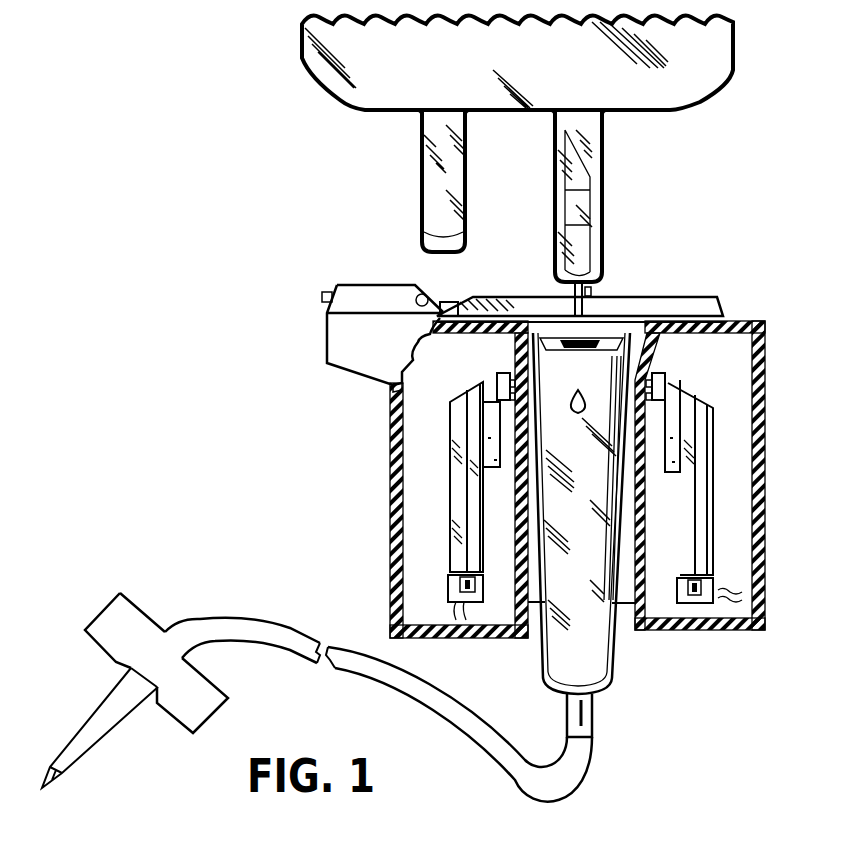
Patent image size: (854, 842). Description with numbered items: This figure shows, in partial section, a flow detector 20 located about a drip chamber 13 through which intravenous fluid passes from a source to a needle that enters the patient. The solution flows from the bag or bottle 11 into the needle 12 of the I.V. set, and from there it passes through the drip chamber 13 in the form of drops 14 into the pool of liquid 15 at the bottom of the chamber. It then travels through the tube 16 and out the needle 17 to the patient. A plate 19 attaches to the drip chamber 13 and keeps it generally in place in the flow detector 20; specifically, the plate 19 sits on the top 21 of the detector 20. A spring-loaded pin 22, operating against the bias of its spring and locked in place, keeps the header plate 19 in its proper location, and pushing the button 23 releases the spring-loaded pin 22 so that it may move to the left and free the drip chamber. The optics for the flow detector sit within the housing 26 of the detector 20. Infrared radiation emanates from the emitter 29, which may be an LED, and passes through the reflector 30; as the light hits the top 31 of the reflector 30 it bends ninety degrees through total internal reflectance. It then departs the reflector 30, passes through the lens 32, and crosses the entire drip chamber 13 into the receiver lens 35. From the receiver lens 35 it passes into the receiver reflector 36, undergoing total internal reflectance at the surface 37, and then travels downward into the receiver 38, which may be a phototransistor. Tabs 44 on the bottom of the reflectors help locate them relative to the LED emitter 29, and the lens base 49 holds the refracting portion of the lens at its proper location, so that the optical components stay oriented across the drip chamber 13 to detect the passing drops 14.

The bag or bottle 11 is at (346, 103).
The needle of the I.V. set 12 is at (580, 180).
The drip chamber 13 is at (545, 498).
The drops 14 is at (576, 408).
The pool of liquid 15 is at (607, 670).
The tube 16 is at (232, 624).
The needle 17 is at (95, 744).
The plate 19 is at (660, 298).
The flow detector 20 is at (367, 443).
The top of the detector 21 is at (750, 321).
The spring-loaded pin 22 is at (453, 302).
The button 23 is at (428, 296).
The housing 26 is at (412, 548).
The emitter 29 is at (455, 598).
The reflector 30 is at (465, 488).
The top of the reflector 31 is at (468, 398).
The lens 32 is at (497, 380).
The receiver lens 35 is at (668, 378).
The receiver reflector 36 is at (700, 468).
The surface 37 is at (700, 396).
The receiver 38 is at (678, 592).
The tabs 44 is at (475, 582).
The lens base 49 is at (465, 422).